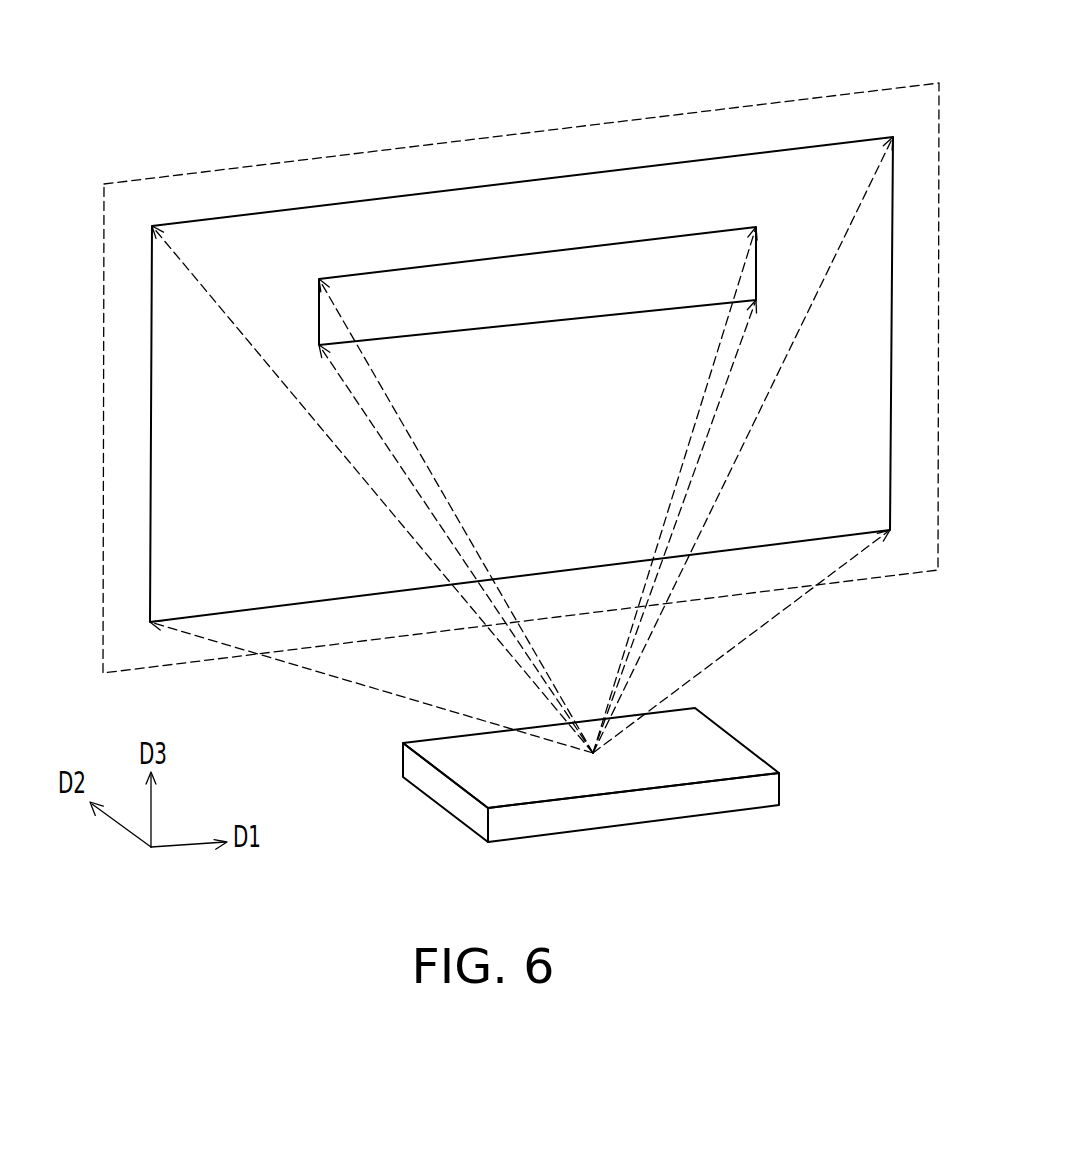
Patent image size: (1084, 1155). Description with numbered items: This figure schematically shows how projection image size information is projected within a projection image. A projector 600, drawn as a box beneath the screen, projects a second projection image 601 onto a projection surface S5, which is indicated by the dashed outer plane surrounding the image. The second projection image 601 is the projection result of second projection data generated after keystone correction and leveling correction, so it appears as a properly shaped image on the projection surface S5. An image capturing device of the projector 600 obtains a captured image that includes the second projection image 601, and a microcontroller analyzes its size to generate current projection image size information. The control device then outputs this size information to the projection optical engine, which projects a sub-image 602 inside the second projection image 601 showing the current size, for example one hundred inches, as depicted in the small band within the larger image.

The projector 600 is at (780, 787).
The second projection image 601 is at (642, 165).
The sub-image 602 is at (537, 252).
The projection surface S5 is at (917, 127).